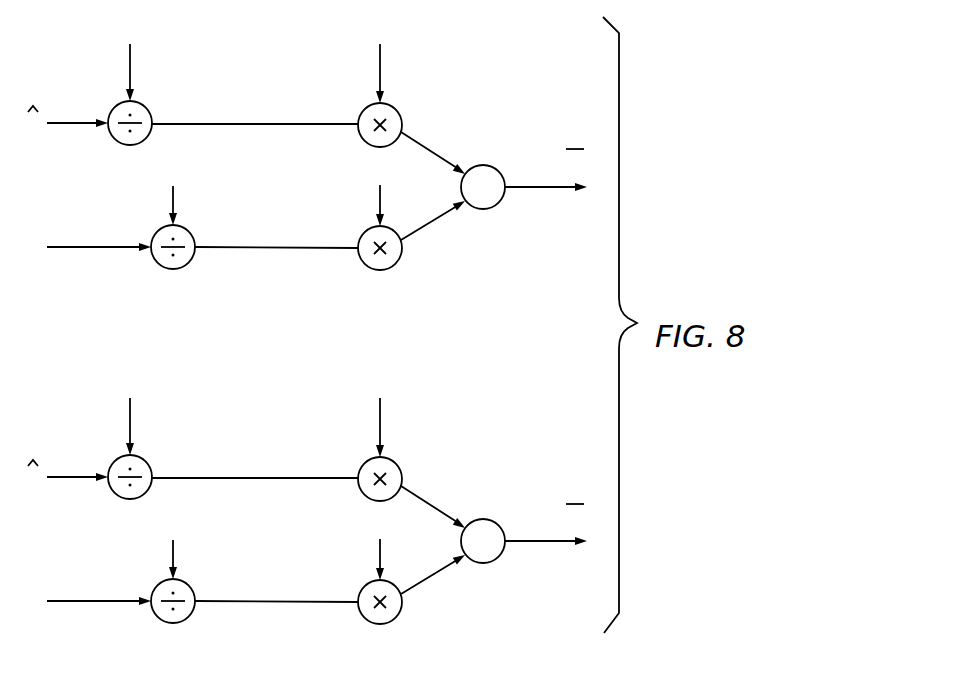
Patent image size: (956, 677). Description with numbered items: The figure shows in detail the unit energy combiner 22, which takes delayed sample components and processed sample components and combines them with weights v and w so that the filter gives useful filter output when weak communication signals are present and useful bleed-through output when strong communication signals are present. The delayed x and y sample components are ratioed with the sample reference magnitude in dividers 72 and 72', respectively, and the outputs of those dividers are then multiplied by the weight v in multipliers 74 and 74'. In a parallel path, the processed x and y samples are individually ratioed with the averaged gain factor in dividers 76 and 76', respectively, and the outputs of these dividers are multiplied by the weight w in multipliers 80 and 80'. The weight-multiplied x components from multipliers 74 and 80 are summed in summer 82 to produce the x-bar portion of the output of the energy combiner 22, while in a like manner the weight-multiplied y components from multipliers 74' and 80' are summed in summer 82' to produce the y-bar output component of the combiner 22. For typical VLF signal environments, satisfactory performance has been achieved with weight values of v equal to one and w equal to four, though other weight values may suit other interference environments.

The unit energy combiner 22 is at (447, 295).
The divider 72 is at (135, 213).
The divider 72' is at (138, 567).
The multiplier 74 is at (298, 233).
The multiplier 74' is at (298, 587).
The divider 76 is at (115, 82).
The divider 76' is at (117, 436).
The multiplier 80 is at (304, 83).
The multiplier 80' is at (306, 437).
The summer 82 is at (494, 186).
The summer 82' is at (494, 540).